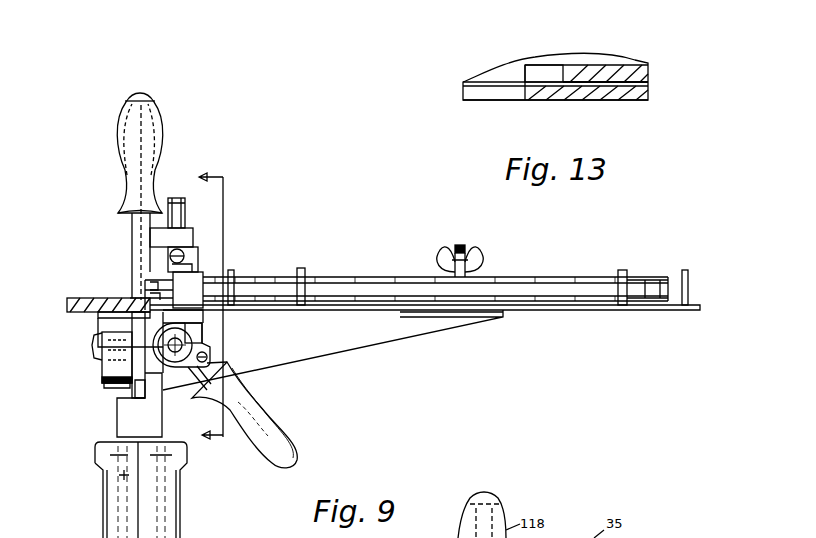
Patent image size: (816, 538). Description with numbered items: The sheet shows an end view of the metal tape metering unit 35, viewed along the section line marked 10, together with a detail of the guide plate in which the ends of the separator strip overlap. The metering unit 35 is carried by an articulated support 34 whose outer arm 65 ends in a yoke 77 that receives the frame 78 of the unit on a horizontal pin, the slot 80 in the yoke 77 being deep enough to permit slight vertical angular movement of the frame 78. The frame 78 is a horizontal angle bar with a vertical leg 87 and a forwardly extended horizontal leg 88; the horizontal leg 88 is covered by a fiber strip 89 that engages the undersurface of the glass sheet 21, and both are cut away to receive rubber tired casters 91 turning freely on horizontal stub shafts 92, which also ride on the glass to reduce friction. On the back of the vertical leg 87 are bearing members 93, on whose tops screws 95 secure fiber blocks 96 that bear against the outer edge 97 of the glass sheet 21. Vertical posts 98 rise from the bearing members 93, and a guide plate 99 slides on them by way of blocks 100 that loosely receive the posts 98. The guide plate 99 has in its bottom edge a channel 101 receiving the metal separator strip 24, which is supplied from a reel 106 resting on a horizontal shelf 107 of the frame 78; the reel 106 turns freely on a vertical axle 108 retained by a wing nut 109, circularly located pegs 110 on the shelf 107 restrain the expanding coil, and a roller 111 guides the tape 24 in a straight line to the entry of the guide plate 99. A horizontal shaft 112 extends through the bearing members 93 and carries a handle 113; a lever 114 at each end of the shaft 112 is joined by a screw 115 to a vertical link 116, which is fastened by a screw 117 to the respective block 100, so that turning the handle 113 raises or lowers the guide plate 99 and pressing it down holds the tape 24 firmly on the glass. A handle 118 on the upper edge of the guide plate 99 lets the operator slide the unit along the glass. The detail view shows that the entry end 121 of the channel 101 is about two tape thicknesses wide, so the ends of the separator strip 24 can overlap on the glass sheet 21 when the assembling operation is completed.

In FIG. 9, the section line 10 is at (219, 168).
In FIG. 9, the sheet of glass 21 is at (85, 298).
In FIG. 13, the sheet of glass 21 is at (480, 76).
In FIG. 9, the metal separator strip 24 is at (250, 282).
In FIG. 13, the metal separator strip 24 is at (483, 88).
In FIG. 9, the articulated support 34 is at (123, 475).
In FIG. 9, the metal tape metering unit 35 is at (257, 224).
In FIG. 9, the arm 65 is at (118, 507).
In FIG. 9, the yoke 77 is at (140, 418).
In FIG. 9, the frame 78 is at (118, 386).
In FIG. 9, the slot 80 is at (140, 394).
In FIG. 9, the vertical leg 87 is at (137, 383).
In FIG. 9, the horizontal leg 88 is at (110, 325).
In FIG. 9, the strip 89 is at (108, 315).
In FIG. 9, the rubber tired casters 91 is at (115, 362).
In FIG. 9, the horizontal stub shafts 92 is at (96, 350).
In FIG. 9, the bearing members 93 is at (163, 375).
In FIG. 9, the screws 95 is at (152, 297).
In FIG. 9, the fiber blocks 96 is at (150, 284).
In FIG. 9, the outer edge 97 is at (142, 301).
In FIG. 9, the vertical posts 98 is at (181, 205).
In FIG. 9, the guide plate 99 is at (135, 228).
In FIG. 13, the guide plate 99 is at (625, 74).
In FIG. 9, the blocks 100 is at (175, 238).
In FIG. 9, the channel 101 is at (141, 272).
In FIG. 13, the channel 101 is at (572, 82).
In FIG. 9, the reel 106 is at (512, 277).
In FIG. 9, the horizontal shelf 107 is at (420, 328).
In FIG. 9, the vertical axle 108 is at (465, 245).
In FIG. 9, the wing nut 109 is at (482, 258).
In FIG. 9, the pegs 110 is at (303, 270).
In FIG. 9, the roller 111 is at (210, 272).
In FIG. 9, the horizontal shaft 112 is at (183, 345).
In FIG. 9, the handle 113 is at (272, 437).
In FIG. 9, the lever 114 is at (208, 357).
In FIG. 9, the screw 115 is at (214, 362).
In FIG. 9, the vertical link 116 is at (195, 331).
In FIG. 9, the screw 117 is at (190, 252).
In FIG. 9, the handle 118 is at (140, 133).
In FIG. 13, the entry end 121 is at (527, 72).